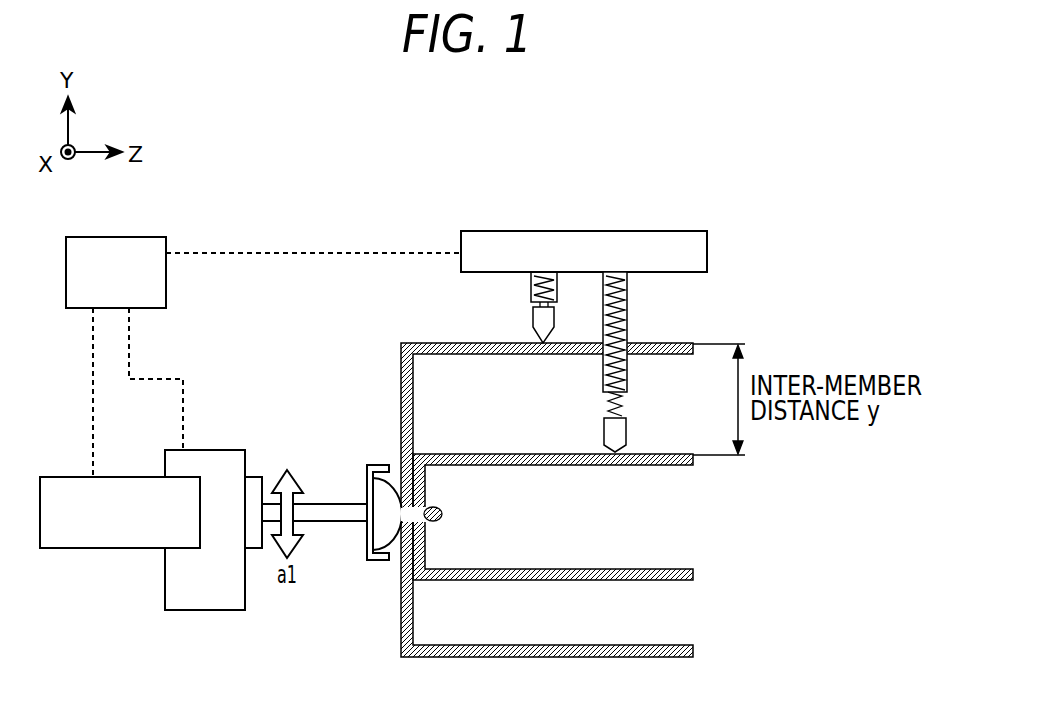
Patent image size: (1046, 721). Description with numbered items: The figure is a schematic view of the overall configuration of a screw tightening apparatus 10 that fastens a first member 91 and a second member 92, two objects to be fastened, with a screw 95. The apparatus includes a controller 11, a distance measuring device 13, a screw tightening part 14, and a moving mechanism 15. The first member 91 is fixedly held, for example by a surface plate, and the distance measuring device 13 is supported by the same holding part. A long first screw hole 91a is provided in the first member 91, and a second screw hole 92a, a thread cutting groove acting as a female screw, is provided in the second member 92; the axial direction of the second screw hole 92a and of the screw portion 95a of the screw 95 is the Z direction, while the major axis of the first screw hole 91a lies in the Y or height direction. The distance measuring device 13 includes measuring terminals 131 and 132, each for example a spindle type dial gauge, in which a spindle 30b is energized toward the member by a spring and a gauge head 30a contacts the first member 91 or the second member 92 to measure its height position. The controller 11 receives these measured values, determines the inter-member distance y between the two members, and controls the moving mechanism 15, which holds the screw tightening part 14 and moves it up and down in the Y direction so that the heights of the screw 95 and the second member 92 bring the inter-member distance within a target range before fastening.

The screw tightening apparatus 10 is at (371, 97).
The controller 11 is at (120, 238).
The distance measuring device 13 is at (622, 230).
The measuring terminal 131 is at (519, 309).
The measuring terminal 132 is at (648, 305).
The screw tightening part 14 is at (53, 482).
The moving mechanism 15 is at (210, 450).
The gauge head 30a is at (602, 447).
The spindle 30b is at (605, 402).
The first member 91 is at (400, 370).
The second member 92 is at (455, 452).
The first screw hole 91a is at (407, 526).
The second screw hole 92a is at (418, 535).
The screw 95 is at (377, 530).
The screw portion 95a is at (432, 509).